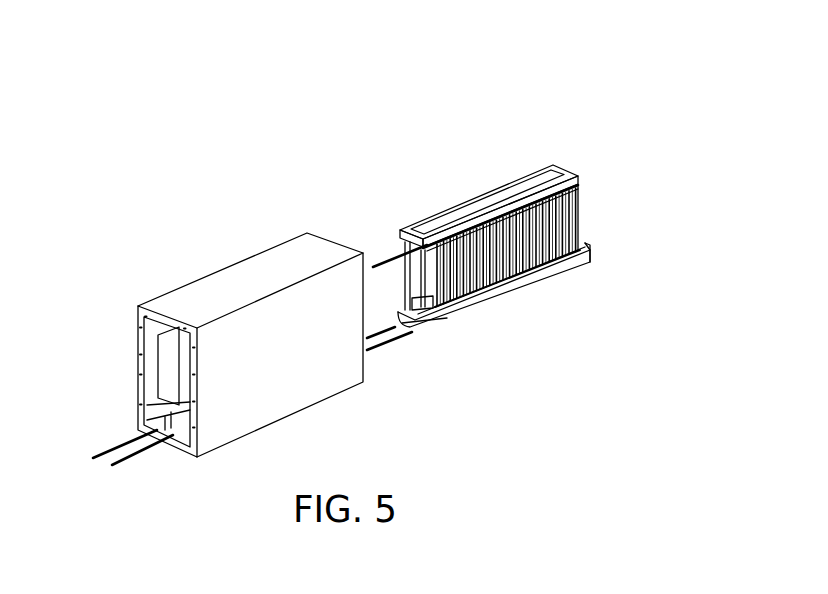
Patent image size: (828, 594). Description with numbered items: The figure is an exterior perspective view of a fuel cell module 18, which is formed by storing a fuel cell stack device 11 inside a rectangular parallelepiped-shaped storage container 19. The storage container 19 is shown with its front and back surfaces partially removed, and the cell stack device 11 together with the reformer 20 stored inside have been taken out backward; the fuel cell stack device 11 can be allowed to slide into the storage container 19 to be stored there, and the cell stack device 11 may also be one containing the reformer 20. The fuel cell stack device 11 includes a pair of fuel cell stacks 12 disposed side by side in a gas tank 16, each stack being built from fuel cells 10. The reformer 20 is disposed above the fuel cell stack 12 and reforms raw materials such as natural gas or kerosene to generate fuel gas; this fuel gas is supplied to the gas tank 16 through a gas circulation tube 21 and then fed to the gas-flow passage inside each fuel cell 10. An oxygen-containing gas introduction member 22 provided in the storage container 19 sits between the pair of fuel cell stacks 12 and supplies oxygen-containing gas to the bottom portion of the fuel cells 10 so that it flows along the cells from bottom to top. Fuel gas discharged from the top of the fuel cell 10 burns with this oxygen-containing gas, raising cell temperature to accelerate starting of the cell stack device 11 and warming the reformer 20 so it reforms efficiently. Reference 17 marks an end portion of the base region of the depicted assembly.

The fuel cell 10 is at (583, 190).
The fuel cell stack device 11 is at (513, 167).
The fuel cell stack 12 is at (453, 318).
The gas tank 16 is at (447, 320).
The end portion of base 17 is at (582, 248).
The fuel cell module 18 is at (213, 85).
The storage container 19 is at (252, 268).
The reformer 20 is at (405, 240).
The gas circulation tube 21 is at (395, 238).
The oxygen-containing gas introduction member 22 is at (187, 353).